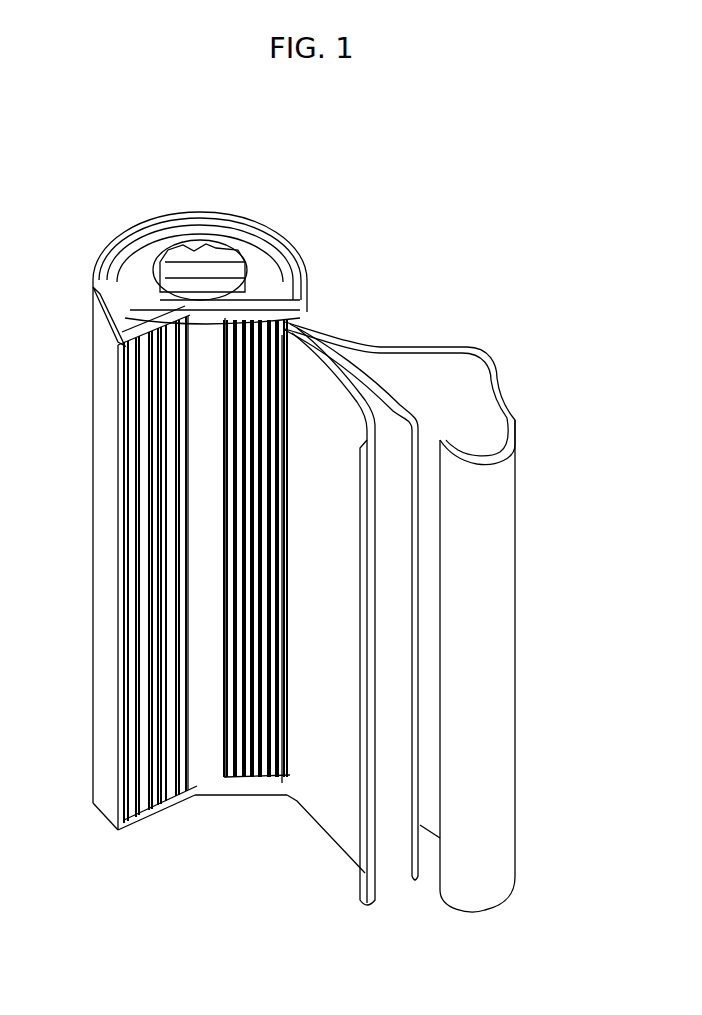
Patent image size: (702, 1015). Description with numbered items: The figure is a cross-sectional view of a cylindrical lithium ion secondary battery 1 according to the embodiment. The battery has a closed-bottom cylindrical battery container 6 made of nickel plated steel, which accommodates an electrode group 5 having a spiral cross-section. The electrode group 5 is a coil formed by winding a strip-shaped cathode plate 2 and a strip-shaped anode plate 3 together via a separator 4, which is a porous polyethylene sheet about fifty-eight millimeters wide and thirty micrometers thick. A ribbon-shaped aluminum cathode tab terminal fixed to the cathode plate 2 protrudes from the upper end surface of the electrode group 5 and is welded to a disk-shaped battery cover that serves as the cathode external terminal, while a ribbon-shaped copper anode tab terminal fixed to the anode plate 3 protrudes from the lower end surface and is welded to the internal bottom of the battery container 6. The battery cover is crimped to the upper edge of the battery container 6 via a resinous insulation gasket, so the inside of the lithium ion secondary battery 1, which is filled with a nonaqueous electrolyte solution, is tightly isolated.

The lithium ion secondary battery 1 is at (312, 212).
The cathode plate 2 is at (315, 800).
The anode plate 3 is at (464, 552).
The separator 4 is at (380, 344).
The electrode group 5 is at (120, 633).
The battery container 6 is at (93, 500).